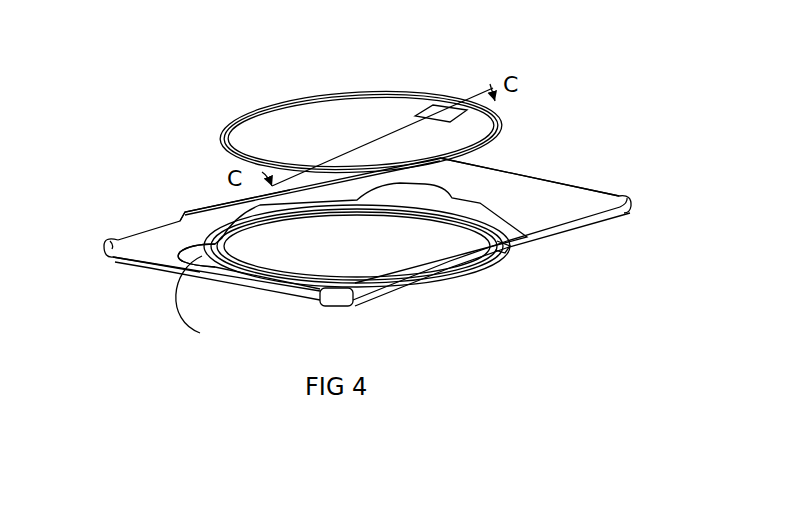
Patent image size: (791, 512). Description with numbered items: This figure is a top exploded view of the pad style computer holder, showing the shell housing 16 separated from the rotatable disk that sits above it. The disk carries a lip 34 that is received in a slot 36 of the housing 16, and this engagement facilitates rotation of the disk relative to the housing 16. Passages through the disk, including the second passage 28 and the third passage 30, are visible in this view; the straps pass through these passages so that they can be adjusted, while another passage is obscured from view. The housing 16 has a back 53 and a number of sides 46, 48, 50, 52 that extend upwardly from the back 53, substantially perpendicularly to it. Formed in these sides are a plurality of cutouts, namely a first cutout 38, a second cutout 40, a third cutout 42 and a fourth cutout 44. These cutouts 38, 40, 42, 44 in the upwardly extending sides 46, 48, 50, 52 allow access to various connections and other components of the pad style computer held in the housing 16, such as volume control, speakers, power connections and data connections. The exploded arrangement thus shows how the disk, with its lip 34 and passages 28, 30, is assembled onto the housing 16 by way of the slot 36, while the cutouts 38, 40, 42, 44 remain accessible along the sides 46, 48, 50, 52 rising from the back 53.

The housing 16 is at (577, 228).
The second passage 28 is at (407, 112).
The third passage 30 is at (412, 102).
The lip 34 is at (513, 124).
The slot 36 is at (483, 237).
The first cutout 38 is at (506, 255).
The second cutout 40 is at (575, 176).
The third cutout 42 is at (128, 255).
The fourth cutout 44 is at (132, 229).
The side 46 is at (423, 276).
The side 48 is at (625, 193).
The side 50 is at (318, 307).
The side 52 is at (192, 203).
The back 53 is at (114, 238).